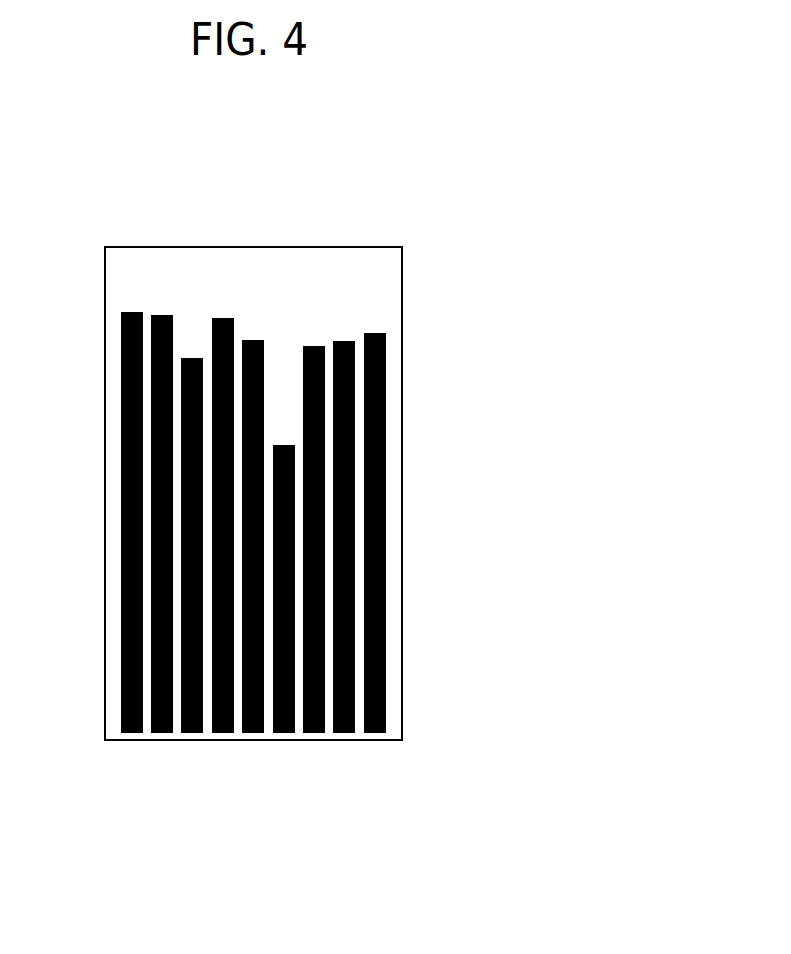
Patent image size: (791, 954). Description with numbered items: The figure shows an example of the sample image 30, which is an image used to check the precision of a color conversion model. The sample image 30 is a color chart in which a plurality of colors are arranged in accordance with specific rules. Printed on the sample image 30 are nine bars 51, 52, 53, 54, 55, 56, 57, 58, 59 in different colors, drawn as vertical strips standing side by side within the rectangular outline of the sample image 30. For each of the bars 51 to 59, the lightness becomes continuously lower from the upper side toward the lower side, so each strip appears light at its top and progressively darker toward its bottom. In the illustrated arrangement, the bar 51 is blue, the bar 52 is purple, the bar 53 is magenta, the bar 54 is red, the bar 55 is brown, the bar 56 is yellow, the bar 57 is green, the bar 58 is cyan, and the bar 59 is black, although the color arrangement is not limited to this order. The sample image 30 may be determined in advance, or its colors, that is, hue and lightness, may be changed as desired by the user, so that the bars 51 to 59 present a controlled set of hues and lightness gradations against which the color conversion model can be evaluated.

The sample image 30 is at (341, 219).
The bar 51 is at (133, 740).
The bar 52 is at (162, 740).
The bar 53 is at (195, 740).
The bar 54 is at (225, 740).
The bar 55 is at (253, 740).
The bar 56 is at (283, 740).
The bar 57 is at (315, 740).
The bar 58 is at (345, 740).
The bar 59 is at (377, 740).